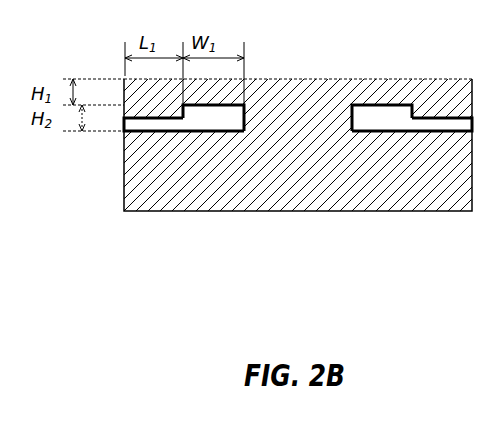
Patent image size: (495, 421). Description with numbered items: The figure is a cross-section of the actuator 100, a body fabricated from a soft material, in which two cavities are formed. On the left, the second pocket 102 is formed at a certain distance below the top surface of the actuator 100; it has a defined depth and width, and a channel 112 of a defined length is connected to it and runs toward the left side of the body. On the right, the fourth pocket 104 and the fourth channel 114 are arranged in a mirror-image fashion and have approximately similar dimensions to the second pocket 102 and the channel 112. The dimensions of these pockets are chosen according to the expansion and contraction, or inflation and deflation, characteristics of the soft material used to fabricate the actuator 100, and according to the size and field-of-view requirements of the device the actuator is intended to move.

The actuator 100 is at (255, 79).
The second pocket 102 is at (236, 119).
The fourth pocket 104 is at (371, 114).
The channel 112 is at (165, 119).
The fourth channel 114 is at (446, 123).